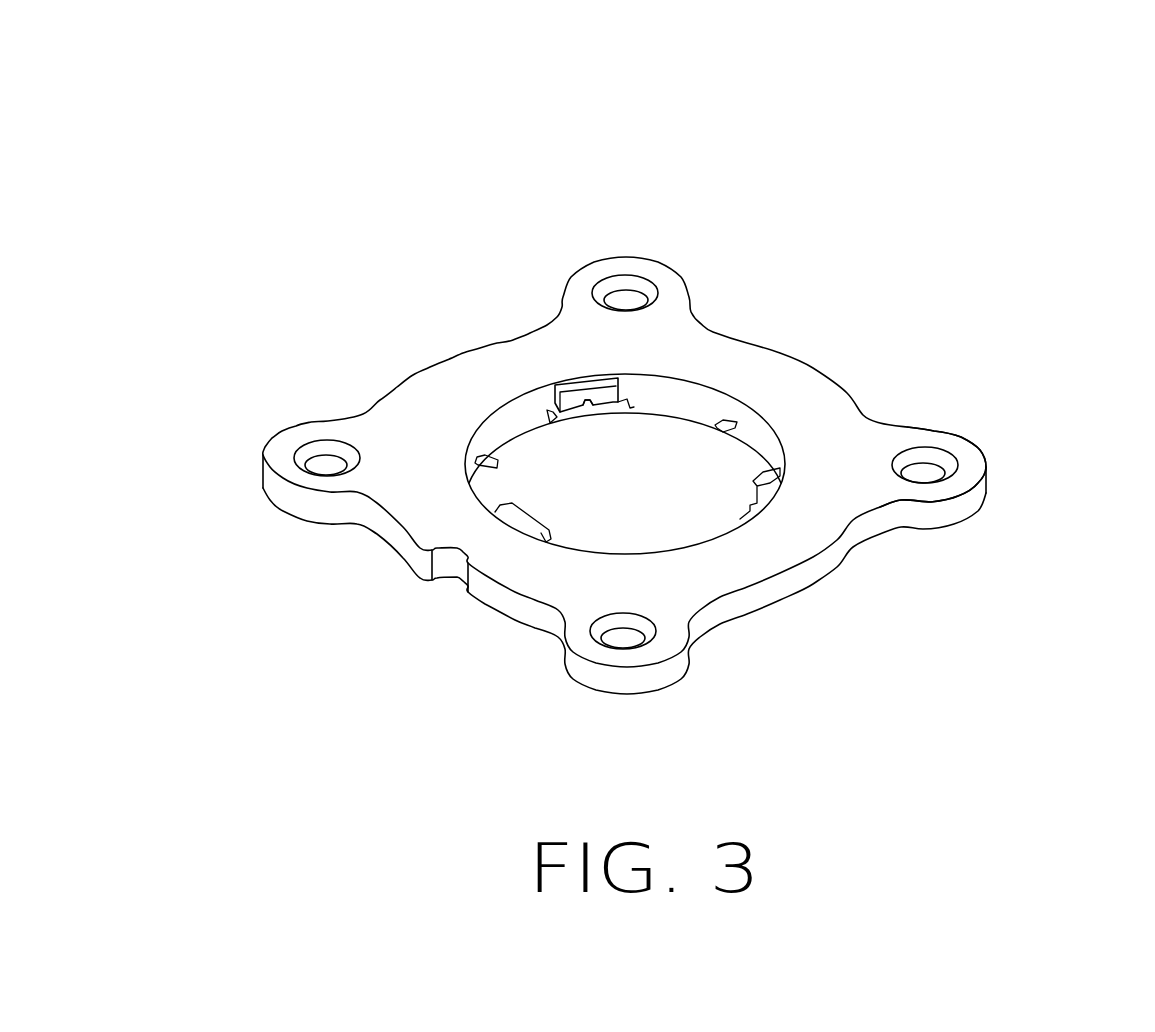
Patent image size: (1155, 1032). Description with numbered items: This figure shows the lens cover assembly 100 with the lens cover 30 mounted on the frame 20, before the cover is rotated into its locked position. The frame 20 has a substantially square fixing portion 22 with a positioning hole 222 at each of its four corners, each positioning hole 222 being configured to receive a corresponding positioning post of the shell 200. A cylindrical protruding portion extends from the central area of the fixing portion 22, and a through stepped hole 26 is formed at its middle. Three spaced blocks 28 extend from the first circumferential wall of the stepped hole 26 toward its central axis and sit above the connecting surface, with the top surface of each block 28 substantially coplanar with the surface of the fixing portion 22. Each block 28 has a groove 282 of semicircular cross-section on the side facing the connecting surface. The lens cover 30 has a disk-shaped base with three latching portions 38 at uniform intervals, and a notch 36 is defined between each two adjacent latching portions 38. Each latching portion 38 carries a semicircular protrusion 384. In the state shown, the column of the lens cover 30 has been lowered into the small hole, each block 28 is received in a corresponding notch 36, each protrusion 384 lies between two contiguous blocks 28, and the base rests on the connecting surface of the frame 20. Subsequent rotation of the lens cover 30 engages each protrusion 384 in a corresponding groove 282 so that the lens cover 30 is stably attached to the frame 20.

The lens cover assembly 100 is at (627, 80).
The shell 200 is at (687, 240).
The frame 20 is at (410, 448).
The fixing portion 22 is at (840, 472).
The positioning hole 222 is at (927, 460).
The stepped hole 26 is at (670, 390).
The block 28 is at (592, 375).
The groove 282 is at (570, 377).
The lens cover 30 is at (537, 457).
The notch 36 is at (553, 417).
The latching portion 38 is at (675, 503).
The protrusion 384 is at (723, 427).